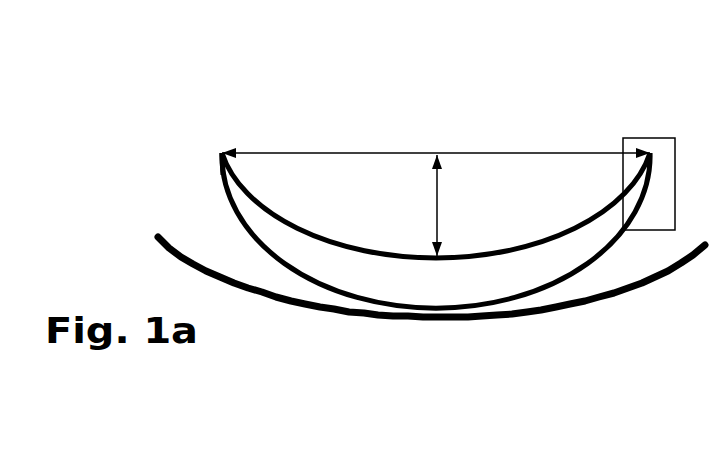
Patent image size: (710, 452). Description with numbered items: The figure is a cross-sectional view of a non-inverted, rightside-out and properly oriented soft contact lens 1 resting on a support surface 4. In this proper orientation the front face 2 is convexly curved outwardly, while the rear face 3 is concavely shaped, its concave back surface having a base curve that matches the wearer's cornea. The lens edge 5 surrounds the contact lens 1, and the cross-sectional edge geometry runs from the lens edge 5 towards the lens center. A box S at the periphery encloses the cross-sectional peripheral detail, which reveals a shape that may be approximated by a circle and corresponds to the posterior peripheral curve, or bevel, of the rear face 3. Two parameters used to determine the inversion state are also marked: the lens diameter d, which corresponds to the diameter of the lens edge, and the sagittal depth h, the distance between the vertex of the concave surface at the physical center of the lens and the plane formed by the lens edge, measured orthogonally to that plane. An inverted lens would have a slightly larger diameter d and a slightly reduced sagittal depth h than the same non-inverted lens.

The soft contact lens 1 is at (462, 290).
The front face 2 is at (580, 280).
The rear face 3 is at (483, 260).
The support surface 4 is at (292, 306).
The lens edge 5 is at (223, 197).
The box S is at (650, 138).
The lens diameter d is at (436, 137).
The sagittal depth h is at (451, 205).